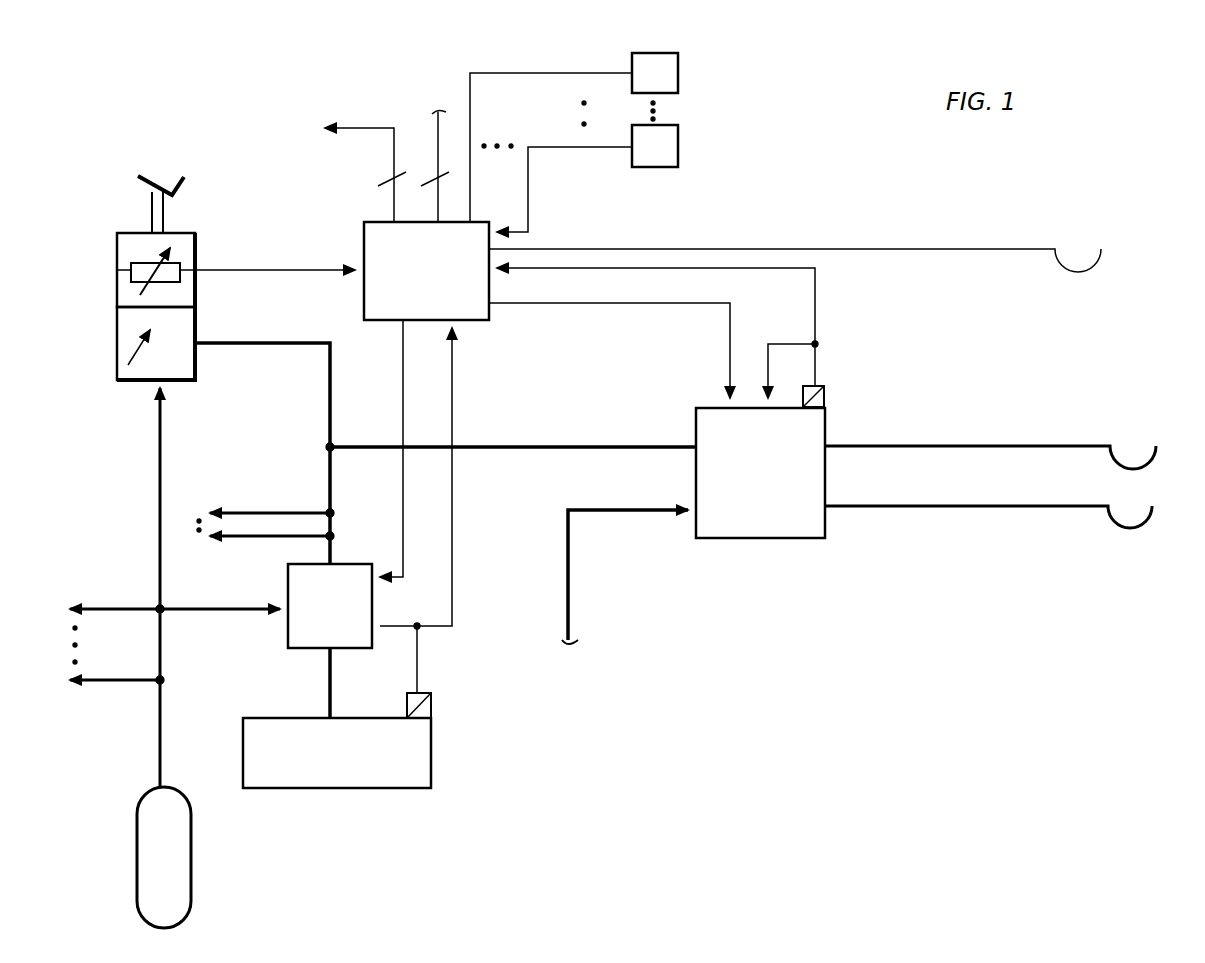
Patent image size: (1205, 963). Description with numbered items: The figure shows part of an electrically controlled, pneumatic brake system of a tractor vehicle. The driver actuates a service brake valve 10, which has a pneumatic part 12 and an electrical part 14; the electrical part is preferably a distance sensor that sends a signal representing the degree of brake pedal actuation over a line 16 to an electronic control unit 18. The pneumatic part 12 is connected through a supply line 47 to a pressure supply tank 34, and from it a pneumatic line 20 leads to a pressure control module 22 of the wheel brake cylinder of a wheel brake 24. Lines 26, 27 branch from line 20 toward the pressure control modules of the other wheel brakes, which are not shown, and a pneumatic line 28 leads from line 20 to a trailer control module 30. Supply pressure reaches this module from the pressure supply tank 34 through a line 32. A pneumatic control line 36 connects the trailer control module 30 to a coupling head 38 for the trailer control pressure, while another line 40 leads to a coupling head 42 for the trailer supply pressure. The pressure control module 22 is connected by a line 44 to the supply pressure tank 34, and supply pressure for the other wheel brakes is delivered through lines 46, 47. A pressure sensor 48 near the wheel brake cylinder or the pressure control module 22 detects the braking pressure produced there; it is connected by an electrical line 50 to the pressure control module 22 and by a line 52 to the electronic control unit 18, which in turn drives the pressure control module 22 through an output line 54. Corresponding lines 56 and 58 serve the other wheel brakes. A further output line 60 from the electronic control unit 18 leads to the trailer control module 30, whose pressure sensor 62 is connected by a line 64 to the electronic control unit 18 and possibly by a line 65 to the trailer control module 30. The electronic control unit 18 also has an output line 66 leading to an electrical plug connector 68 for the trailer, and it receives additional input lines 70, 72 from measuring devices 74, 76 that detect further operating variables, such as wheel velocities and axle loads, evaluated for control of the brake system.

The service brake valve 10 is at (132, 180).
The pneumatic part 12 is at (140, 362).
The electrical part 14 is at (182, 238).
The line 16 is at (263, 266).
The electronic control unit 18 is at (362, 245).
The pneumatic line 20 is at (272, 342).
The pressure control module 22 is at (353, 578).
The wheel brake 24 is at (393, 782).
The line 26 is at (285, 511).
The line 27 is at (277, 540).
The pneumatic line 28 is at (538, 445).
The trailer control module 30 is at (760, 540).
The line 32 is at (636, 513).
The pressure supply tank 34 is at (185, 862).
The pneumatic control line 36 is at (986, 444).
The coupling head 38 is at (1145, 437).
The line 40 is at (944, 510).
The coupling head 42 is at (1125, 548).
The line 44 is at (255, 612).
The line 46 is at (121, 607).
The supply line 47 is at (164, 445).
The pressure sensor 48 is at (432, 708).
The electrical line 50 is at (420, 662).
The line 52 is at (455, 570).
The output line 54 is at (402, 395).
The line 56 is at (365, 130).
The line 58 is at (435, 142).
The output line 60 is at (602, 306).
The pressure sensor 62 is at (826, 395).
The line 64 is at (816, 312).
The line 65 is at (770, 343).
The output line 66 is at (855, 248).
The electrical plug connector 68 is at (1086, 242).
The input line 70 is at (550, 72).
The input line 72 is at (568, 150).
The measuring device 74 is at (672, 72).
The measuring device 76 is at (678, 147).